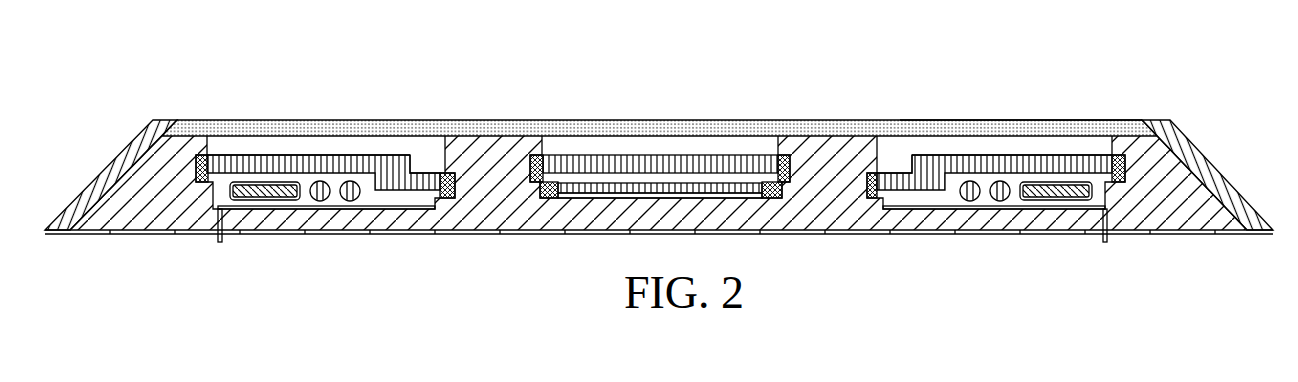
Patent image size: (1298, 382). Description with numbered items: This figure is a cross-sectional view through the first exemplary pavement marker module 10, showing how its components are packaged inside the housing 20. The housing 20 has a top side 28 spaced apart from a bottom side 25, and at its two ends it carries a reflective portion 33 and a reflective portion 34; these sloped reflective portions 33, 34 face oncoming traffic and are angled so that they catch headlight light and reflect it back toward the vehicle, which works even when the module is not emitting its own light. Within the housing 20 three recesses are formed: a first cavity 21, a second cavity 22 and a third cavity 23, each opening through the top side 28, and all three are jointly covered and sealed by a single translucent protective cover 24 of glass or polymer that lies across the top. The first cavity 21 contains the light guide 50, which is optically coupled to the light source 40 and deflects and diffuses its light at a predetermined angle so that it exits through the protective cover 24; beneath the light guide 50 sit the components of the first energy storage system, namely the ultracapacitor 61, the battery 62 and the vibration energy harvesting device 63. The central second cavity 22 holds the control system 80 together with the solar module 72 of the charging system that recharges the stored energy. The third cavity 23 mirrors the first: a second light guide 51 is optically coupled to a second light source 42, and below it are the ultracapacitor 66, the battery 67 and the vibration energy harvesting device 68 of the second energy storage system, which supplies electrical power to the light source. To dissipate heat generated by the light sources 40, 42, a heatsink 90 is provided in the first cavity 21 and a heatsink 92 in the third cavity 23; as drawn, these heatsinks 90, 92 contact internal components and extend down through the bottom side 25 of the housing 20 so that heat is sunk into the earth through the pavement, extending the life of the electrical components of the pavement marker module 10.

The pavement marker module 10 is at (1033, 58).
The housing 20 is at (1197, 188).
The first cavity 21 is at (357, 145).
The second cavity 22 is at (587, 195).
The third cavity 23 is at (1037, 148).
The protective cover 24 is at (1117, 124).
The bottom side 25 is at (1162, 233).
The top side 28 is at (1088, 121).
The reflective portion 33 is at (113, 163).
The reflective portion 34 is at (1197, 155).
The light source 40 is at (428, 160).
The second light source 42 is at (895, 163).
The light guide 50 is at (287, 162).
The second light guide 51 is at (972, 160).
The ultracapacitor 61 is at (317, 194).
The battery 62 is at (257, 193).
The vibration energy harvesting device 63 is at (345, 194).
The ultracapacitor 66 is at (997, 194).
The battery 67 is at (1053, 193).
The vibration energy harvesting device 68 is at (967, 194).
The solar module 72 is at (638, 162).
The control system 80 is at (723, 185).
The heatsink 90 is at (408, 208).
The heatsink 92 is at (893, 209).